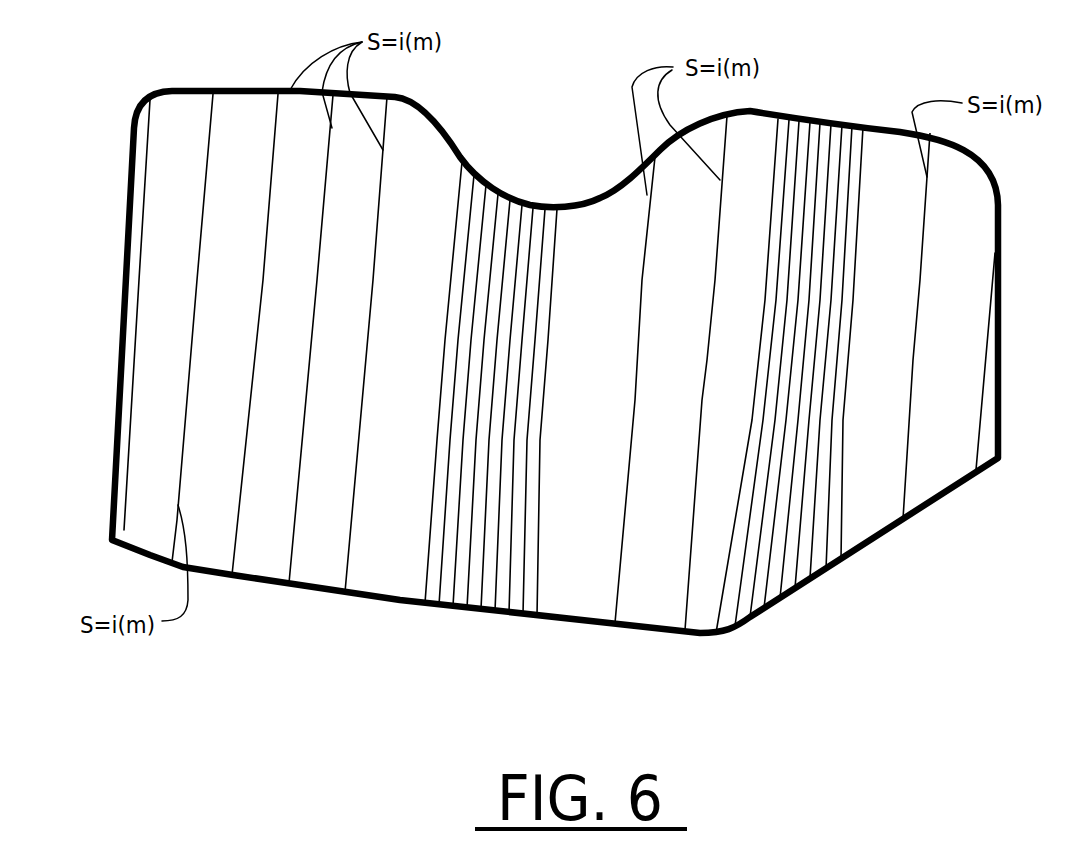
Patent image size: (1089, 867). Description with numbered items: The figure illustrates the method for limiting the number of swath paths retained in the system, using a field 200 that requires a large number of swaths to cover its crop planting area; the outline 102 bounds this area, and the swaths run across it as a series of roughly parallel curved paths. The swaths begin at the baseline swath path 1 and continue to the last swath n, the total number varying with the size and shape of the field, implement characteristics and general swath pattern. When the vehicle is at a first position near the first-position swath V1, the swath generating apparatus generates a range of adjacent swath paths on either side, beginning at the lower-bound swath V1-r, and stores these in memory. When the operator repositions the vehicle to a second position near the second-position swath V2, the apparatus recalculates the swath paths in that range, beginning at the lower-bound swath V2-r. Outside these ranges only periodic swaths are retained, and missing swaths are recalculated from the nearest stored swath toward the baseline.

The windshield glass panel 102 is at (190, 155).
The field 200 is at (842, 62).
The baseline swath path 1 is at (122, 512).
The total number of individual swaths n is at (980, 427).
The swath near first vehicle position V1 is at (482, 585).
The swath near second vehicle position V2 is at (778, 599).
The lower bound of first swath path range V1-r is at (428, 555).
The lower bound of second swath path range V2-r is at (716, 633).